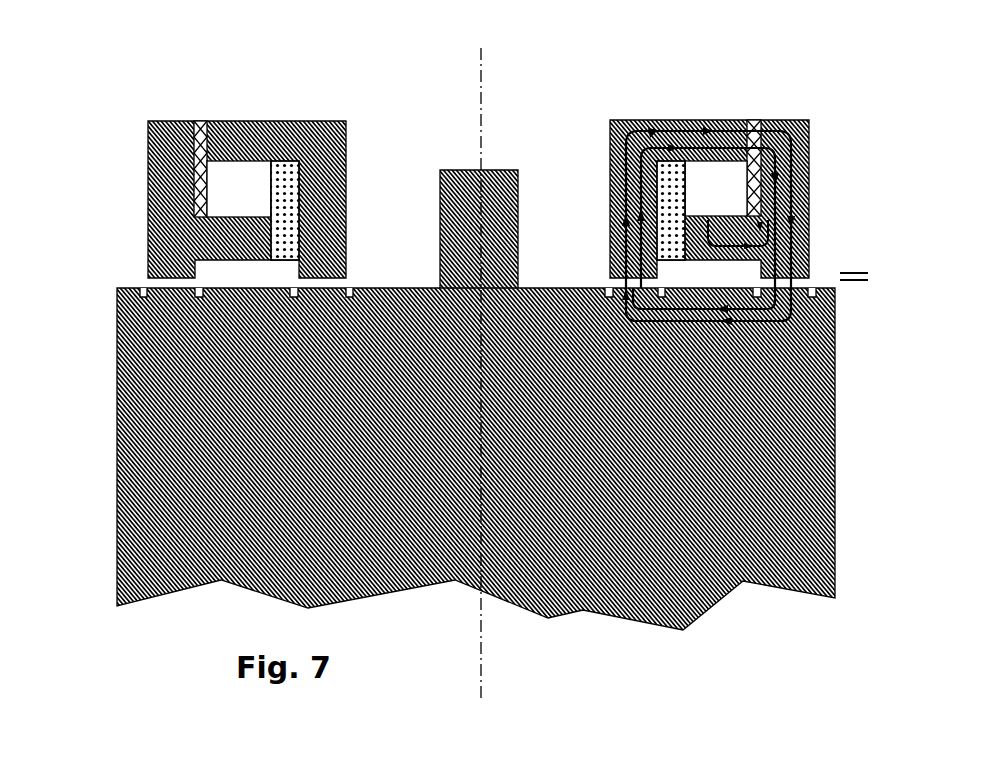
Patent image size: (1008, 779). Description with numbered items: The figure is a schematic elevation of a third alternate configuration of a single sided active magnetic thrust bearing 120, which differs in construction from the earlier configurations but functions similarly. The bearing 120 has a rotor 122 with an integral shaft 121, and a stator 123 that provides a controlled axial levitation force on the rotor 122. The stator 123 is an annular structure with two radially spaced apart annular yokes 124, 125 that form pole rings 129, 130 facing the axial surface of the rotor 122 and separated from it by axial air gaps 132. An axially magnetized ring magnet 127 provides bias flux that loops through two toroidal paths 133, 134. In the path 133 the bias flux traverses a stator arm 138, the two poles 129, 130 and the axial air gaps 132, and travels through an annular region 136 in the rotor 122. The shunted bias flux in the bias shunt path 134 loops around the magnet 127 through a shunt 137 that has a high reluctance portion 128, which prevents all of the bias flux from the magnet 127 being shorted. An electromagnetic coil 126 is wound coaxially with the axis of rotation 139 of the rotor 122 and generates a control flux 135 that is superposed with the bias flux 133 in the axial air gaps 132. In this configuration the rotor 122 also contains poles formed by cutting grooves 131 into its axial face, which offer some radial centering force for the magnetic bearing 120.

The single sided active magnetic thrust bearing 120 is at (248, 155).
The shaft 121 is at (490, 161).
The rotor 122 is at (563, 278).
The stator 123 is at (733, 162).
The annular yoke 124 is at (338, 214).
The annular yoke 125 is at (140, 238).
The electromagnetic coil 126 is at (284, 254).
The axially magnetized ring magnet 127 is at (238, 152).
The high reluctance portion 128 is at (188, 112).
The pole ring 129 is at (162, 281).
The pole ring 130 is at (318, 280).
The grooves 131 is at (187, 290).
The axial air gaps 132 is at (866, 270).
The bias flux path 133 is at (768, 248).
The bias shunt path 134 is at (770, 192).
The control flux 135 is at (785, 126).
The annular region 136 is at (618, 332).
The shunt 137 is at (140, 143).
The stator arm 138 is at (238, 224).
The axis of rotation 139 is at (471, 70).